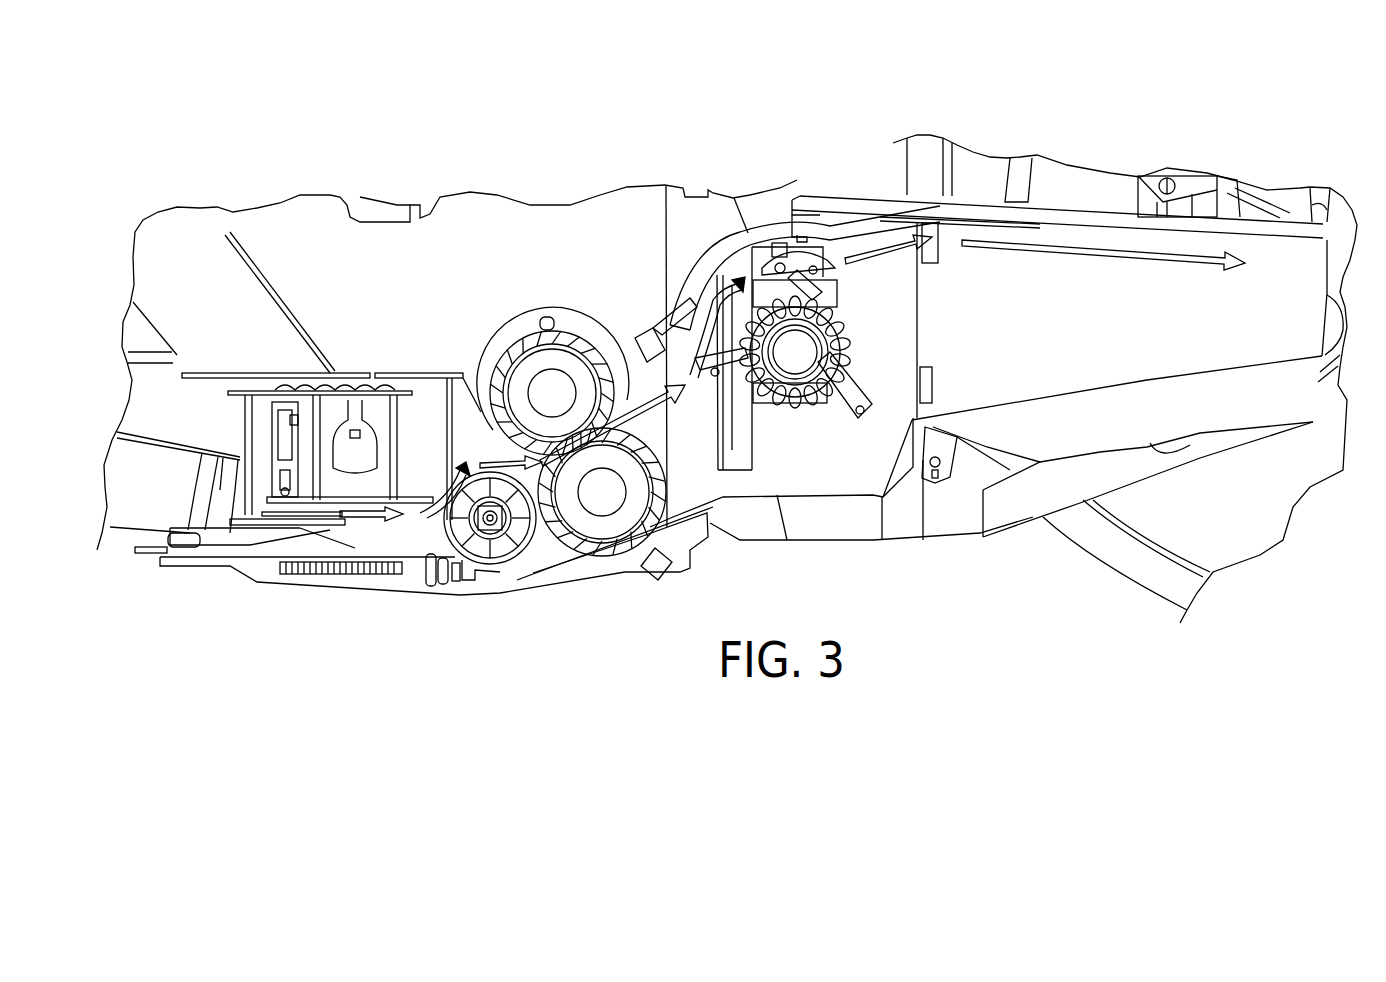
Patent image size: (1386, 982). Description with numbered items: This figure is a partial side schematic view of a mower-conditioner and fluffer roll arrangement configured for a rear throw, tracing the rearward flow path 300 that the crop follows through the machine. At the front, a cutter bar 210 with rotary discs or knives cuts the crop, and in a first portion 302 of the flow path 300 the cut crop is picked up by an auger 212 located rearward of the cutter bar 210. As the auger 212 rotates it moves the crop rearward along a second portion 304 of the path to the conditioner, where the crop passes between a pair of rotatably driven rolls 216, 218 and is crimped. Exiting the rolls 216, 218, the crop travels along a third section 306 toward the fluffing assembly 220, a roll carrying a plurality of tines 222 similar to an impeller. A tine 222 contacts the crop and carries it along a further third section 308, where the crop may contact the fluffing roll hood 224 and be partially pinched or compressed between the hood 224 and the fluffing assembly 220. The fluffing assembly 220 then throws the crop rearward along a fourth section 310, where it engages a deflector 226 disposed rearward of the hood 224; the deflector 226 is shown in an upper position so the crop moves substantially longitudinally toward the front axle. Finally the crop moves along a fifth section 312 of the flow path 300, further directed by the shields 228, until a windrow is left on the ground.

The rearward flow path 300 is at (1054, 103).
The cutter bar 210 is at (290, 595).
The auger 212 is at (500, 567).
The roll 216 is at (532, 372).
The roll 218 is at (617, 525).
The fluffing assembly 220 is at (870, 333).
The tines 222 is at (848, 403).
The fluffing roll hood 224 is at (700, 275).
The deflector 226 is at (848, 218).
The shields 228 is at (1257, 420).
The first portion 302 is at (350, 520).
The second portion 304 is at (498, 458).
The third section 306 is at (660, 408).
The third section 308 is at (690, 318).
The fourth section 310 is at (885, 260).
The fifth section 312 is at (1070, 258).